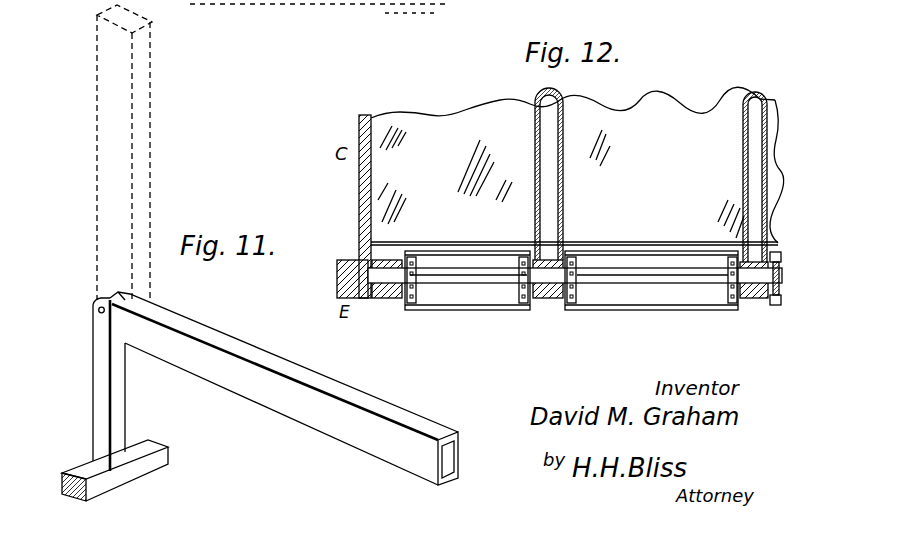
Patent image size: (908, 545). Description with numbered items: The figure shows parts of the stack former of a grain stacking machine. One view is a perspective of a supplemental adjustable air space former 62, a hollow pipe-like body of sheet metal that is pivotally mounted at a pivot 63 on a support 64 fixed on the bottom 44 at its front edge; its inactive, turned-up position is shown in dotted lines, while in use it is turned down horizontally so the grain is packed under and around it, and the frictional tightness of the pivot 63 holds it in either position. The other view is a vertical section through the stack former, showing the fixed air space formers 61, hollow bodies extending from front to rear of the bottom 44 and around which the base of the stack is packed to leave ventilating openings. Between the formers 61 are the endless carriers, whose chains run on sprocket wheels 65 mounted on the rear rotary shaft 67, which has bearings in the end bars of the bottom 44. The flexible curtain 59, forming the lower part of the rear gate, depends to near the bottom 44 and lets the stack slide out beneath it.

In FIG. 11, the bottom 44 is at (157, 468).
In FIG. 12, the bottom 44 is at (417, 267).
In FIG. 12, the flexible curtain 59 is at (577, 166).
In FIG. 12, the air space formers 61 is at (540, 94).
In FIG. 11, the supplemental adjustable air space formers 62 is at (281, 366).
In FIG. 11, the pivots 63 is at (97, 312).
In FIG. 11, the supports 64 is at (99, 397).
In FIG. 12, the sprocket wheels 65 is at (407, 298).
In FIG. 12, the rear rotary shaft 67 is at (503, 280).